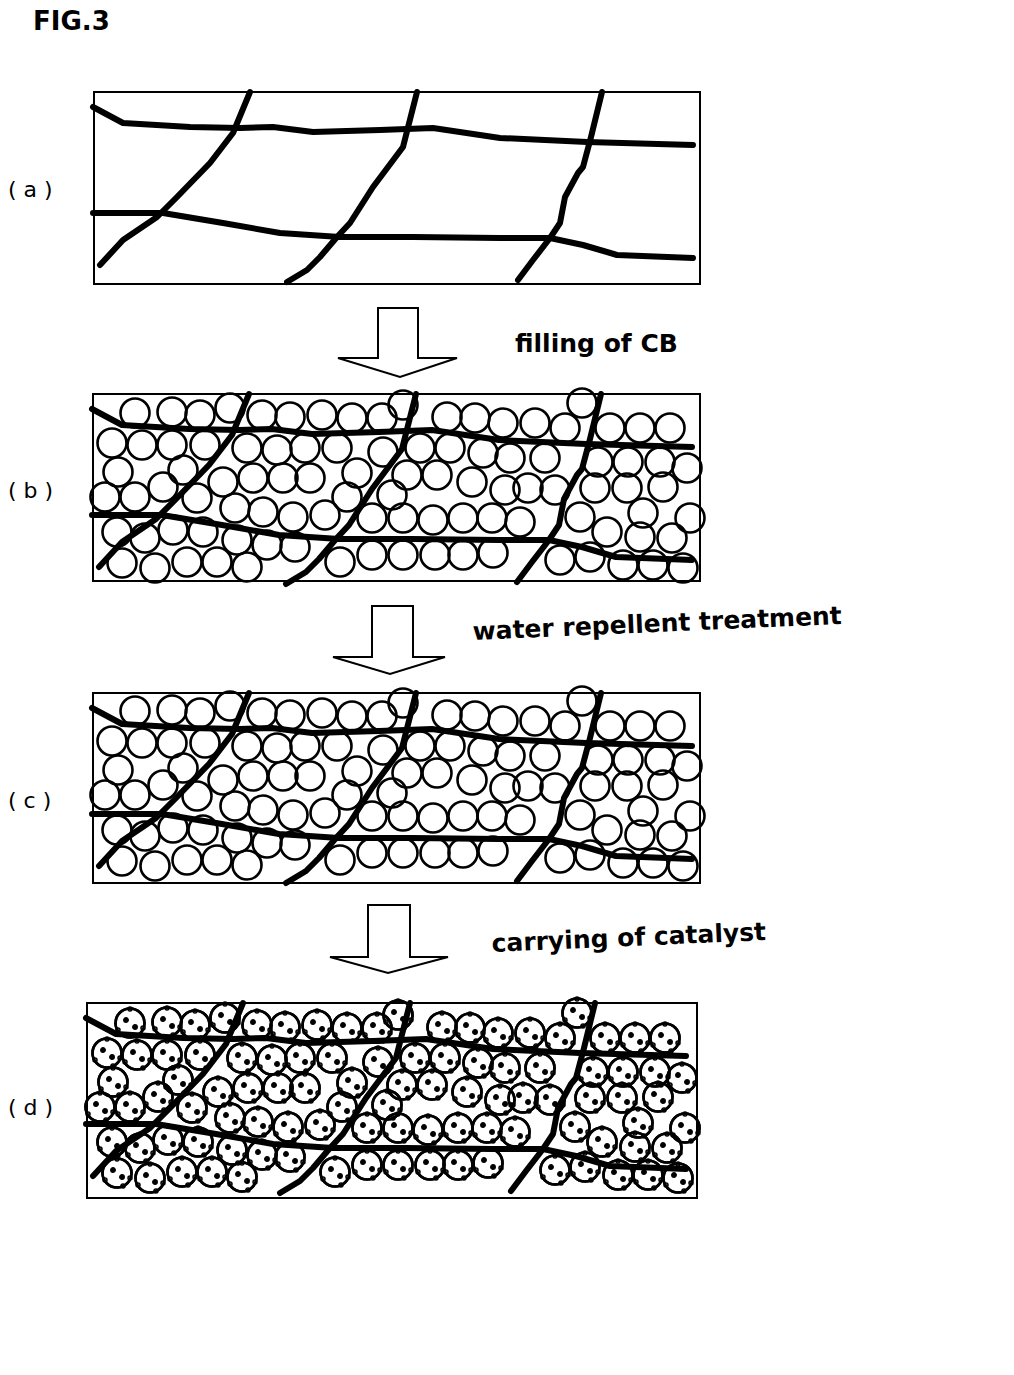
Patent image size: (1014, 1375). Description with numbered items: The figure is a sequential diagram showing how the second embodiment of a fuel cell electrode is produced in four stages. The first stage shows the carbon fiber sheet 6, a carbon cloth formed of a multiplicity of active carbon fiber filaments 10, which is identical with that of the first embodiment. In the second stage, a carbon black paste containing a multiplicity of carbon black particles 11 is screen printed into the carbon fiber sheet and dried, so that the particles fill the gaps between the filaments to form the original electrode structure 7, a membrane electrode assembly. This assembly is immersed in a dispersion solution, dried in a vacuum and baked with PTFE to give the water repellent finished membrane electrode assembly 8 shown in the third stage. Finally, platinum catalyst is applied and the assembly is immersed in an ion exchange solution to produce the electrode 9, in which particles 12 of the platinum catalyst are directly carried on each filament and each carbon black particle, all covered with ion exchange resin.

The carbon fiber sheet 6 is at (731, 127).
The electrode structure 7 is at (719, 432).
The water repellent finished membrane electrode assembly 8 is at (719, 725).
The electrode 9 is at (716, 1029).
The active carbon fiber filaments 10 is at (570, 198).
The carbon black particles 11 is at (687, 470).
The particles of platinum catalyst 12 is at (693, 1115).